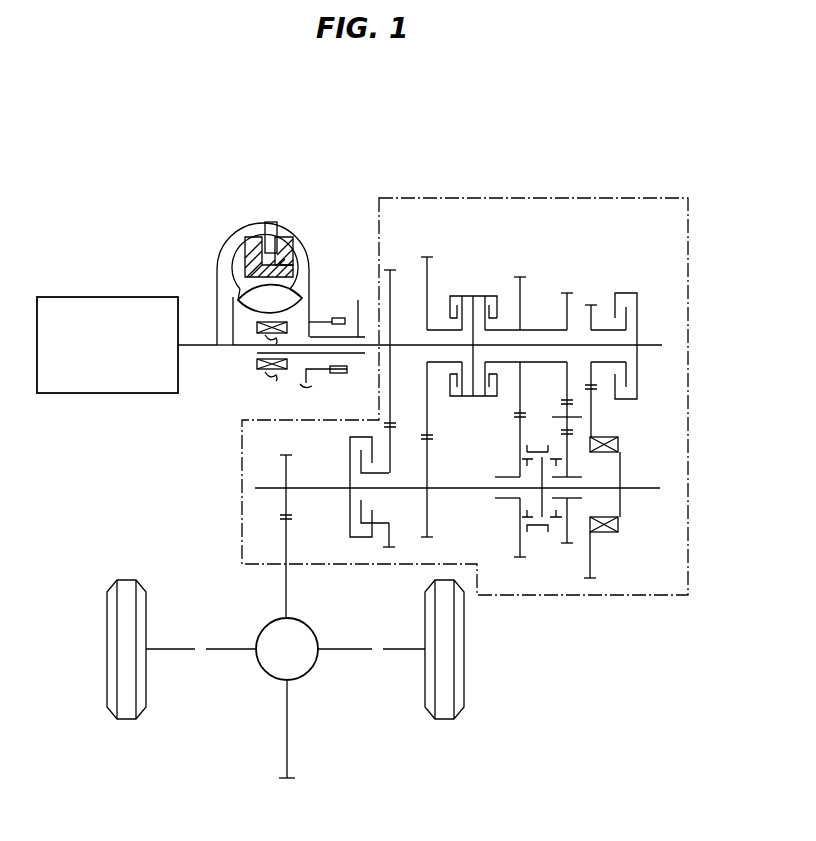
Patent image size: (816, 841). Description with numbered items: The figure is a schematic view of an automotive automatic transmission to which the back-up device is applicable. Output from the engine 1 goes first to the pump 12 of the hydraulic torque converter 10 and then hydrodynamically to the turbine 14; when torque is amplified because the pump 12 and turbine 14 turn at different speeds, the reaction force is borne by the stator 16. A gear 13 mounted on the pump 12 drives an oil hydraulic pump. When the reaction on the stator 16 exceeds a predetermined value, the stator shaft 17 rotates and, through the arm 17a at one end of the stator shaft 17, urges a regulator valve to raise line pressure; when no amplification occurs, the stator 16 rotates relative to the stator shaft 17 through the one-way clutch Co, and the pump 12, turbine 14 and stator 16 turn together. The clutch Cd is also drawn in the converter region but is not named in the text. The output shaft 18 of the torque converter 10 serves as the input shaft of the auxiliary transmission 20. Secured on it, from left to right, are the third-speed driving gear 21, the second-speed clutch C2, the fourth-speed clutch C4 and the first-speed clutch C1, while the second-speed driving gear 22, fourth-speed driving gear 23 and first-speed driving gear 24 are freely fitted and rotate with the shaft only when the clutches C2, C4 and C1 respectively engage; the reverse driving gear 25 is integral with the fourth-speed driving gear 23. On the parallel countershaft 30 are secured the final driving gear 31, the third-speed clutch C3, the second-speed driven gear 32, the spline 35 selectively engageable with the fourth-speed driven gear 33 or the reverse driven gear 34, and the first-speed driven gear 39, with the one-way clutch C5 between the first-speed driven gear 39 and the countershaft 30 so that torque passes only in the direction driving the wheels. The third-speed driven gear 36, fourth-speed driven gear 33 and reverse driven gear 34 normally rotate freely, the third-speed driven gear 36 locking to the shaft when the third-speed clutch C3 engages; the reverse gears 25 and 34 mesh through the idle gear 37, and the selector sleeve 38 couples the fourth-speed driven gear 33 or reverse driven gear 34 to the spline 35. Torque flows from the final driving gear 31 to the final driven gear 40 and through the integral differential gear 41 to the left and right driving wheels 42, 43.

The engine 1 is at (143, 297).
The hydraulic torque converter 10 is at (298, 216).
The pump 12 is at (303, 236).
The gear 13 is at (335, 318).
The turbine 14 is at (230, 245).
The stator 16 is at (247, 310).
The stator shaft 17 is at (313, 335).
The arm 17a is at (360, 305).
The output shaft 18 is at (302, 353).
The auxiliary transmission 20 is at (605, 193).
The third-speed driving gear 21 is at (391, 280).
The second-speed driving gear 22 is at (428, 265).
The fourth-speed driving gear 23 is at (522, 295).
The first-speed driving gear 24 is at (593, 315).
The reverse driving gear 25 is at (569, 305).
The countershaft 30 is at (267, 486).
The final driving gear 31 is at (288, 475).
The second-speed driven gear 32 is at (428, 468).
The fourth-speed driven gear 33 is at (518, 432).
The reverse driven gear 34 is at (568, 524).
The spline 35 is at (495, 498).
The third-speed driven gear 36 is at (390, 523).
The idle gear 37 is at (567, 410).
The selector sleeve 38 is at (533, 533).
The first-speed driven gear 39 is at (592, 425).
The final driven gear 40 is at (287, 602).
The differential gear 41 is at (293, 675).
The driving wheel 42 is at (122, 721).
The driving wheel 43 is at (440, 721).
The direct clutch Cd is at (262, 245).
The one-way clutch Co is at (262, 371).
The first-speed clutch C1 is at (638, 313).
The second-speed clutch C2 is at (460, 295).
The third-speed clutch C3 is at (348, 512).
The fourth-speed clutch C4 is at (486, 295).
The one-way clutch C5 is at (605, 533).